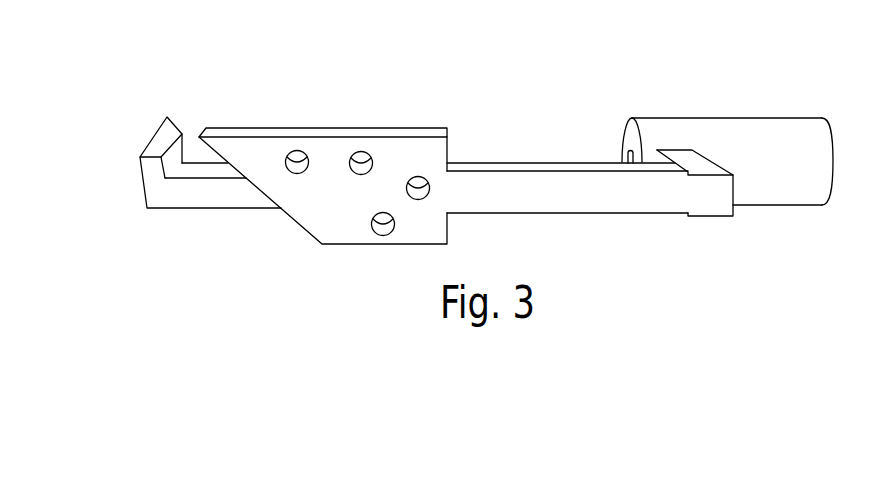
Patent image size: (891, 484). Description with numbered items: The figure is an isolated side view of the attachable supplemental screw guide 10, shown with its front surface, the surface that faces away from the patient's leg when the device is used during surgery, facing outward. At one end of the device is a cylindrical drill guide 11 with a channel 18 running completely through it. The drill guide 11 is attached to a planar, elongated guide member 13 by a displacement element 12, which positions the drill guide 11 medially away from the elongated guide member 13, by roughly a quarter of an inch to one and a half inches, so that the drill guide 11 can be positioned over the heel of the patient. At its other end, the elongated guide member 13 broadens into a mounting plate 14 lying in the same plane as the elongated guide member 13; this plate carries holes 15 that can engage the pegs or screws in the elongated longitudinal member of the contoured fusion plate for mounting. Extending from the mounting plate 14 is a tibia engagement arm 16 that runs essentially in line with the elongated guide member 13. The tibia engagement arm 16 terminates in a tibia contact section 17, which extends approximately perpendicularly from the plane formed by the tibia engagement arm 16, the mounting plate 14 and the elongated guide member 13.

The attachable supplemental screw guide 10 is at (485, 76).
The cylindrical drill guide 11 is at (761, 125).
The displacement element 12 is at (680, 152).
The elongated guide member 13 is at (600, 203).
The mounting plate 14 is at (332, 222).
The holes 15 is at (300, 155).
The tibia engagement arm 16 is at (203, 195).
The tibia contact section 17 is at (155, 143).
The channel 18 is at (626, 159).